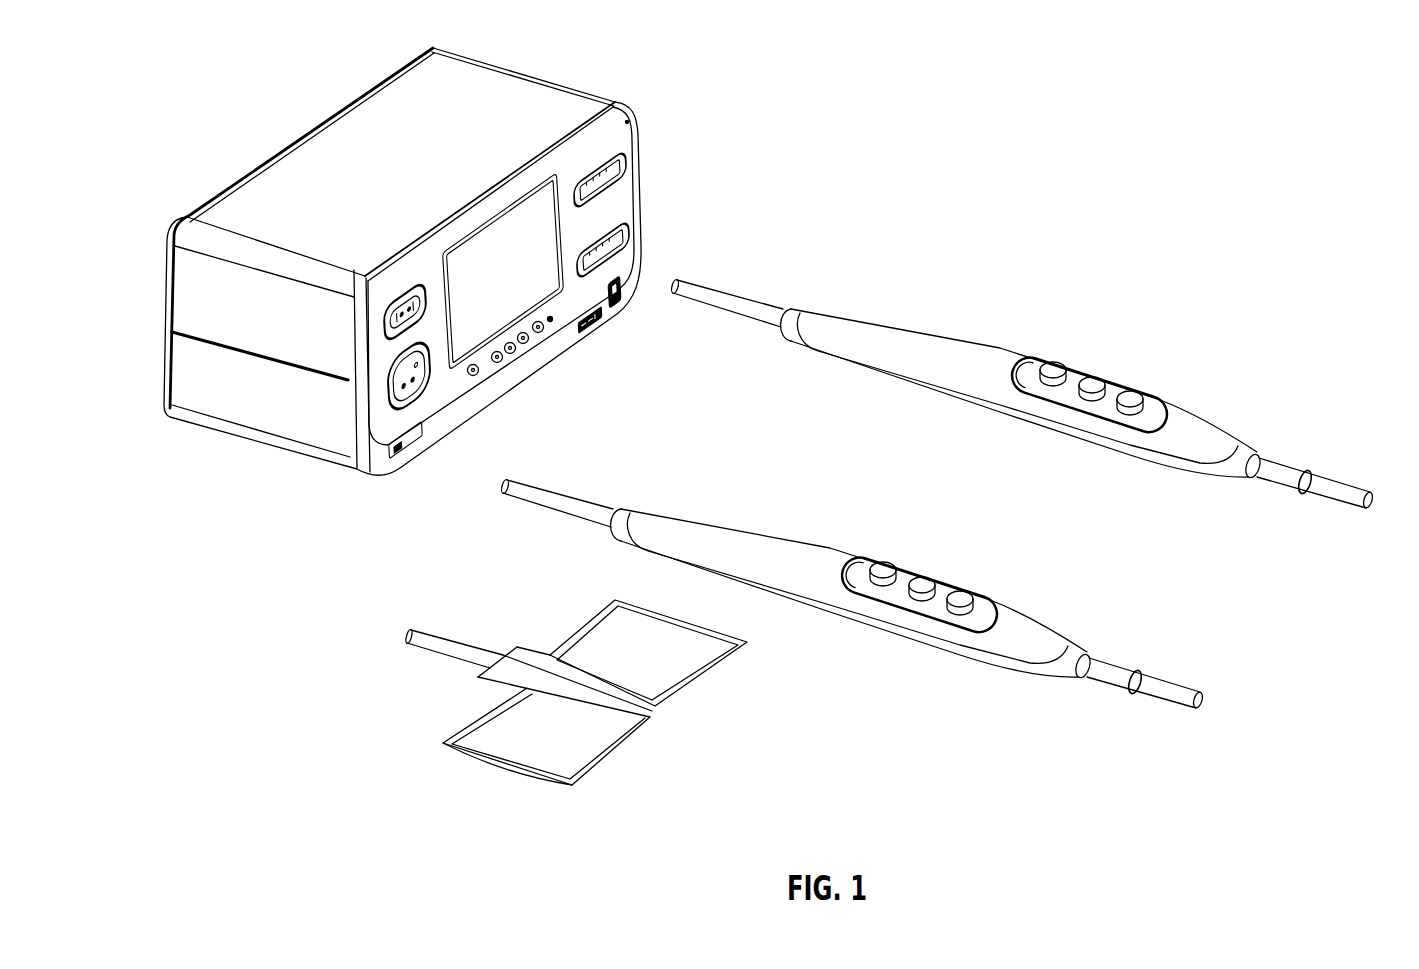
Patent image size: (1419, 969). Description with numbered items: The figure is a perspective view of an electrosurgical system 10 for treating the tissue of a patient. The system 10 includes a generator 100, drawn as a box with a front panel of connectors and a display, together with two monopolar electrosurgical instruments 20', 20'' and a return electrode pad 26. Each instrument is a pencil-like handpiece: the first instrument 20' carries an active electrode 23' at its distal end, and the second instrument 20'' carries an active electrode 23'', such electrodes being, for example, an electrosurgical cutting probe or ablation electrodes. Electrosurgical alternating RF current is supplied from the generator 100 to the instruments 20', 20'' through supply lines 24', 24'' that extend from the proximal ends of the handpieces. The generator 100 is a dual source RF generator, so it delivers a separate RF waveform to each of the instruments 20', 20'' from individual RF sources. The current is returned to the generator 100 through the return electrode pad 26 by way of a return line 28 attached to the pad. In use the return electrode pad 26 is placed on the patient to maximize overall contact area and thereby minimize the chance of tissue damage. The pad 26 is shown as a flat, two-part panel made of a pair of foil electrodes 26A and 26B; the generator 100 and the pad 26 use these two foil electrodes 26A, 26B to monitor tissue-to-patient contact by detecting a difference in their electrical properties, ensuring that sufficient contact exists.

The electrosurgical system 10 is at (1037, 186).
The generator 100 is at (273, 86).
The monopolar electrosurgical instrument 20' is at (1021, 394).
The monopolar electrosurgical instrument 20'' is at (851, 594).
The active electrode 23' is at (1315, 462).
The active electrode 23'' is at (1146, 662).
The supply line 24' is at (726, 279).
The supply line 24'' is at (556, 479).
The return electrode pad 26 is at (515, 773).
The foil electrode 26A is at (668, 678).
The foil electrode 26B is at (585, 750).
The return line 28 is at (452, 638).